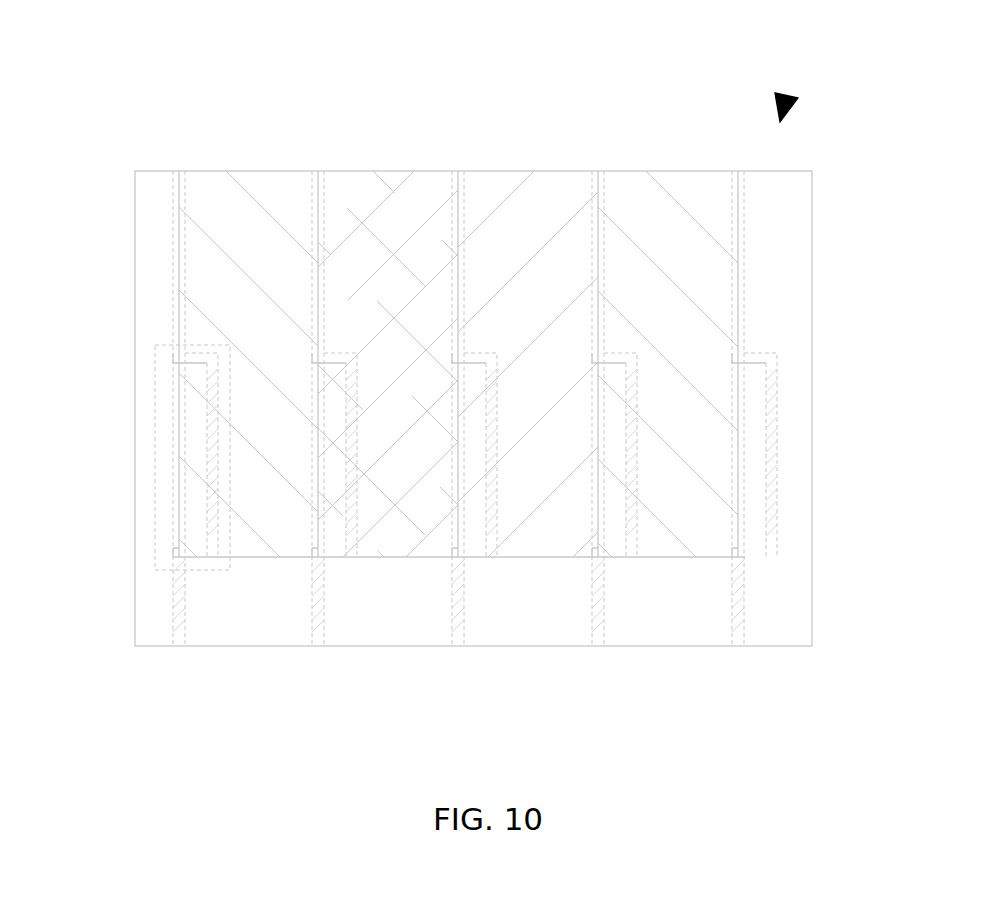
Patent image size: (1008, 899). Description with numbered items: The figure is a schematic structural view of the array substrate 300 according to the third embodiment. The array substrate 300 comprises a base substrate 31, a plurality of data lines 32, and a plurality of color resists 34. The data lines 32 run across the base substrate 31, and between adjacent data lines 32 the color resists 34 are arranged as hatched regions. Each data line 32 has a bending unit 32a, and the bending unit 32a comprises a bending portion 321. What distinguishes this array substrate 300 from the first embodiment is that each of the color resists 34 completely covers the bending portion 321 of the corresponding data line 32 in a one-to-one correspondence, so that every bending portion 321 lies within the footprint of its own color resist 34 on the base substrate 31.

The array substrate 300 is at (788, 95).
The base substrate 31 is at (795, 280).
The data line 32 is at (178, 646).
The bending unit 32a is at (157, 345).
The bending portion 321 is at (212, 484).
The color resist 34 is at (236, 198).